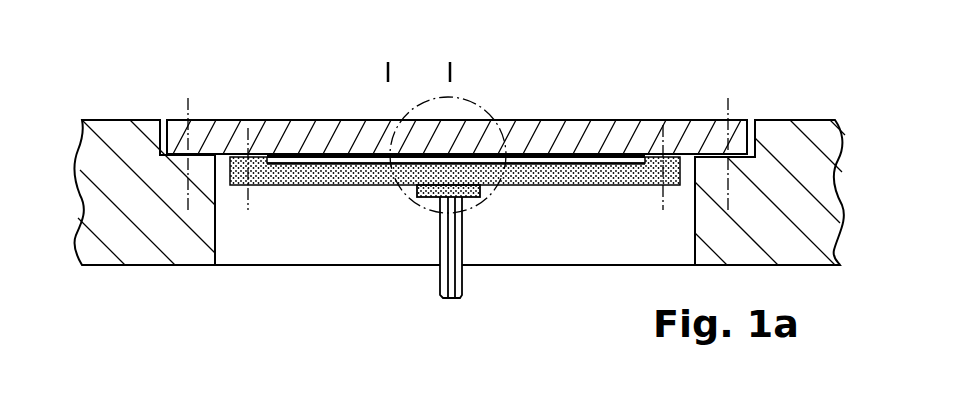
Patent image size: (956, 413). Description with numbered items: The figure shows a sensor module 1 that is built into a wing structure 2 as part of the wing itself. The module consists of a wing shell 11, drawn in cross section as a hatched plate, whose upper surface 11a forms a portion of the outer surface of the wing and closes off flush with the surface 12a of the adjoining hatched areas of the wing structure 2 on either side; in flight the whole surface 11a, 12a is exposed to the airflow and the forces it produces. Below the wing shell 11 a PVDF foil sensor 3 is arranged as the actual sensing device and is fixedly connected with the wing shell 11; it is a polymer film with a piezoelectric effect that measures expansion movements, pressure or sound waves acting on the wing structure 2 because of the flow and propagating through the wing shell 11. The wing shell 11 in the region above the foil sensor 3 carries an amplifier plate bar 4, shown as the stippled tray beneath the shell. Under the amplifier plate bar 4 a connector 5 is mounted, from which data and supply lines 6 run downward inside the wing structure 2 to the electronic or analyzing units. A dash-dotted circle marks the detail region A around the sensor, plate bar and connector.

The sensor module 1 is at (162, 64).
The wing structure 2 is at (771, 120).
The PVDF foil sensor 3 is at (297, 156).
The amplifier plate bar 4 is at (318, 187).
The connector 5 is at (470, 197).
The data and supply lines 6 is at (440, 234).
The wing shell 11 is at (556, 120).
The surface of the wing shell 11a is at (611, 114).
The surface of the adjoining wing structure 12a is at (815, 114).
The detail region A is at (434, 90).